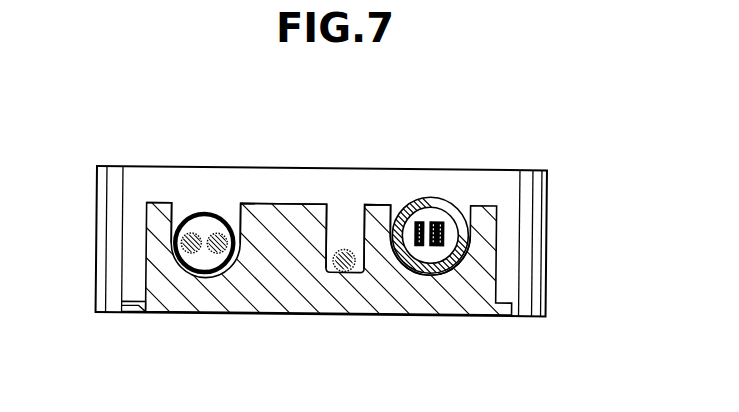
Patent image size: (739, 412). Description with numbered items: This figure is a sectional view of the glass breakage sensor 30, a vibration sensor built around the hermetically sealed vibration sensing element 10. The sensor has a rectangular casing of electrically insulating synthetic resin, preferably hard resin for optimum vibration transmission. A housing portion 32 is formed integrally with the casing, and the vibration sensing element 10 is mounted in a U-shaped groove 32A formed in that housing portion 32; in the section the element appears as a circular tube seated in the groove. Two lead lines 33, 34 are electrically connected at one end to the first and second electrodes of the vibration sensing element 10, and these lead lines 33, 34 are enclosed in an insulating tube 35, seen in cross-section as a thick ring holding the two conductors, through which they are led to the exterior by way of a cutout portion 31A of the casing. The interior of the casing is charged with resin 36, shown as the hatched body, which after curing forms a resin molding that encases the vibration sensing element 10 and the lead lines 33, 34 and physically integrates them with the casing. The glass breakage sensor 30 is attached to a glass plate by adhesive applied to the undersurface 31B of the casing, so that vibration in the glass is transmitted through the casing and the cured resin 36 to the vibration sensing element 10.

The vibration sensing element 10 is at (427, 197).
The glass breakage sensor 30 is at (547, 167).
The cutout portion 31A is at (177, 206).
The undersurface 31B is at (152, 313).
The housing portion 32 is at (383, 205).
The U-shaped groove 32A is at (433, 278).
The lead line 33 is at (228, 266).
The lead line 34 is at (195, 264).
The insulating tube 35 is at (210, 212).
The resin 36 is at (292, 193).